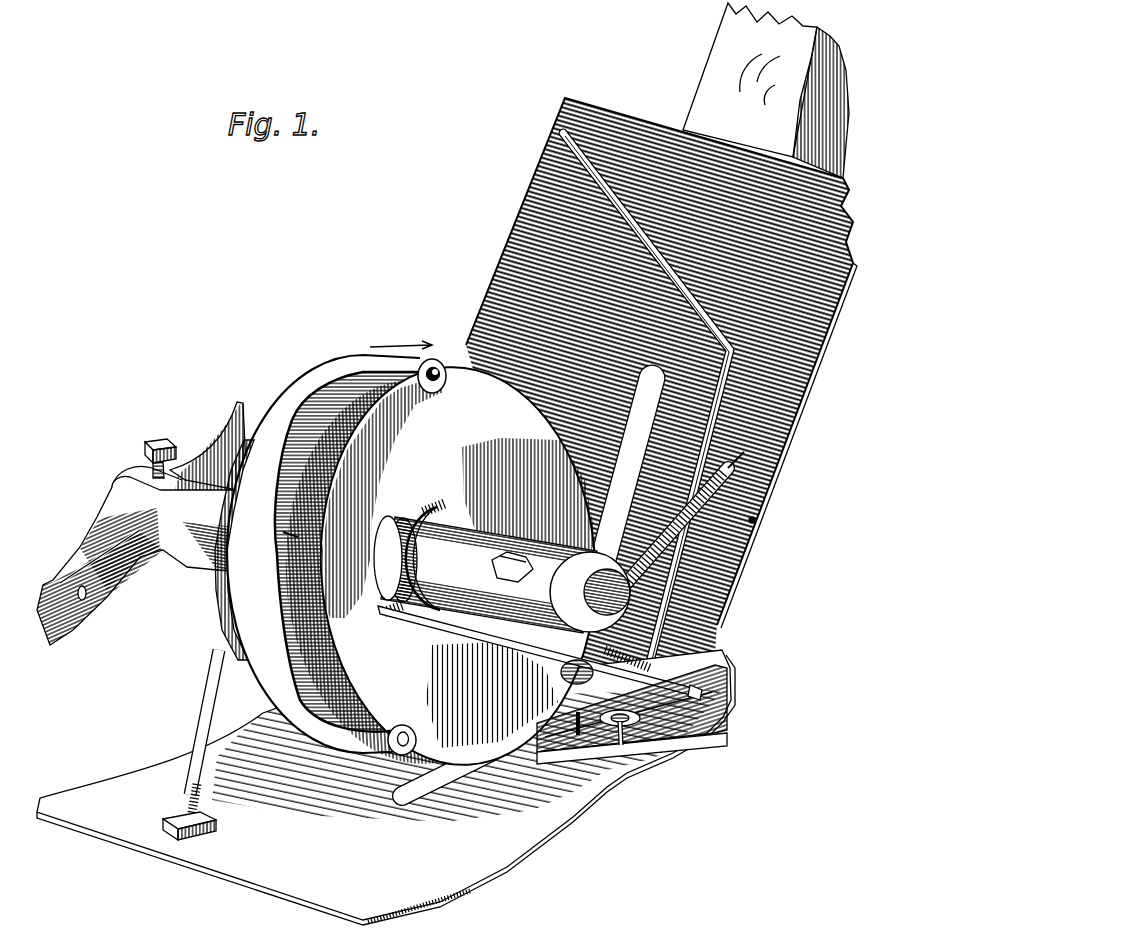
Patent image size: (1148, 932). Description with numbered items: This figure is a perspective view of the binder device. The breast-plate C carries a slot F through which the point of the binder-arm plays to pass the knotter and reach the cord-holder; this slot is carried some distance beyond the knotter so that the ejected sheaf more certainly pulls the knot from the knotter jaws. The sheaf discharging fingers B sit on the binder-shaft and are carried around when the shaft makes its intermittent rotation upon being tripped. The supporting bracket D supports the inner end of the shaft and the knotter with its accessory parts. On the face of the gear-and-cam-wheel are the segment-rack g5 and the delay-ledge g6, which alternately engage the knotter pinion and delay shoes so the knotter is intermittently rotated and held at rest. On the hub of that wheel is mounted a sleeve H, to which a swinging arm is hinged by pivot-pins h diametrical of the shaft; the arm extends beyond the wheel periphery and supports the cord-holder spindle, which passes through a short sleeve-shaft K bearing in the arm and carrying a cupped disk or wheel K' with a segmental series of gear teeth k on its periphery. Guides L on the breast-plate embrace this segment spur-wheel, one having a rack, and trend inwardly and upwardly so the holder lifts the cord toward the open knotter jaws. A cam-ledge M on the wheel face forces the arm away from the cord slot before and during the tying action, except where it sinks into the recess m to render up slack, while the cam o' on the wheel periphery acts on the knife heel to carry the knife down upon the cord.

The breast-plate C is at (661, 383).
The slot in guide plate F' is at (627, 469).
The delay-ledge g6 is at (322, 557).
The cam-ledge M is at (416, 563).
The segment-rack g5 is at (332, 552).
The recess in cam-ledge m is at (297, 539).
The supporting bracket D is at (181, 487).
The sheaf discharging fingers B is at (127, 560).
The sleeve H is at (502, 574).
The pivot-pins h is at (432, 506).
The gear teeth k is at (605, 654).
The disk or wheel K' is at (651, 705).
The guides L is at (728, 700).
The sleeve-shaft K is at (599, 744).
The slot F is at (448, 774).
The cam o' is at (212, 745).